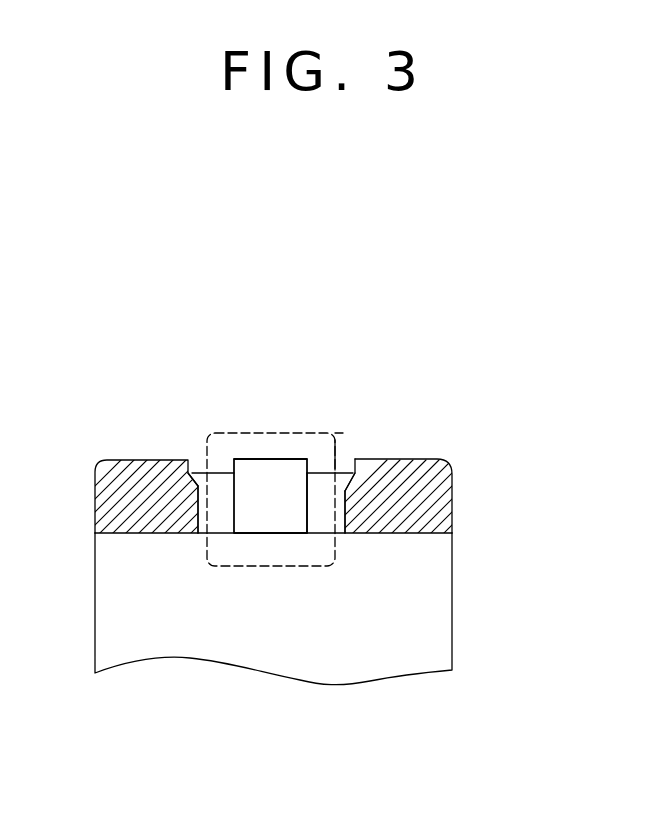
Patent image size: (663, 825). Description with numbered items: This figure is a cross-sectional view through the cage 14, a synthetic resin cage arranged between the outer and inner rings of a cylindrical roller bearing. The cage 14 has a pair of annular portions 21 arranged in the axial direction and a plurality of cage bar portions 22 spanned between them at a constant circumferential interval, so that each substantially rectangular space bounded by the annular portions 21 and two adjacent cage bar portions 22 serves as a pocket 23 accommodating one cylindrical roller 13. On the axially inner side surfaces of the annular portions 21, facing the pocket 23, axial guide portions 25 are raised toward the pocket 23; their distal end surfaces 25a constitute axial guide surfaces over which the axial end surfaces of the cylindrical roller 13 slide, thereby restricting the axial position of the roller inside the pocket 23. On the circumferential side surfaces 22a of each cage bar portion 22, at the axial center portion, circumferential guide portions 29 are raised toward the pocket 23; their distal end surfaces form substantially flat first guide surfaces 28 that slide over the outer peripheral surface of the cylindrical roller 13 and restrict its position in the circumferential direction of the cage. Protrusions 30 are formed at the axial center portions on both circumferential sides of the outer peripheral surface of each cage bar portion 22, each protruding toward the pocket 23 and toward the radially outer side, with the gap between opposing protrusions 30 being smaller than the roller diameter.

The cylindrical roller 13 is at (343, 433).
The cage 14 is at (445, 440).
The annular portion 21 is at (112, 491).
The cage bar portion 22 is at (220, 469).
The circumferential side surface 22a is at (318, 485).
The pocket 23 is at (290, 505).
The axial guide portion 25 is at (191, 510).
The distal end surface 25a is at (205, 520).
The first guide surface 28 is at (266, 498).
The circumferential guide portion 29 is at (267, 559).
The protrusion 30 is at (266, 458).